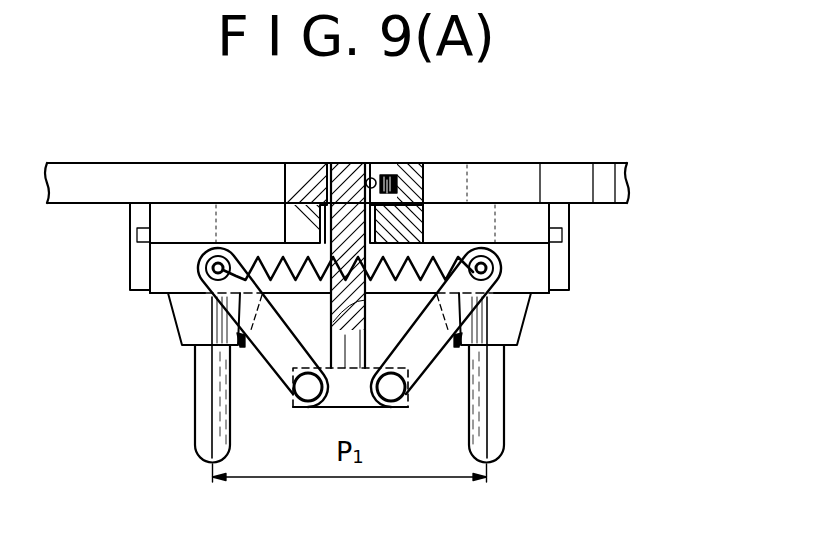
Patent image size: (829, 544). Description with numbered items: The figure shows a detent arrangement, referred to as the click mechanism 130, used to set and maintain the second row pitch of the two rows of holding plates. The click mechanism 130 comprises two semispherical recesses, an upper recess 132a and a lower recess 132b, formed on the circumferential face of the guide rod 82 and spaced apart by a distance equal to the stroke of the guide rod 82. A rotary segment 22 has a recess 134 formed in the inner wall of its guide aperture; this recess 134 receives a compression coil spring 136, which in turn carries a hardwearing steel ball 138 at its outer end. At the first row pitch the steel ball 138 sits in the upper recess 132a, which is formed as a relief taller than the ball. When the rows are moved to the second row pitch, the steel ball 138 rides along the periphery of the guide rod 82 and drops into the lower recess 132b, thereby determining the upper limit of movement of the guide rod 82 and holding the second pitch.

The rotary segment 22 is at (604, 190).
The click mechanism 130 is at (370, 140).
The upper recess 132a is at (288, 243).
The lower recess 132b is at (363, 305).
The guide rod 82 is at (337, 162).
The recess 134 is at (420, 182).
The compression coil spring 136 is at (389, 172).
The steel ball 138 is at (355, 162).